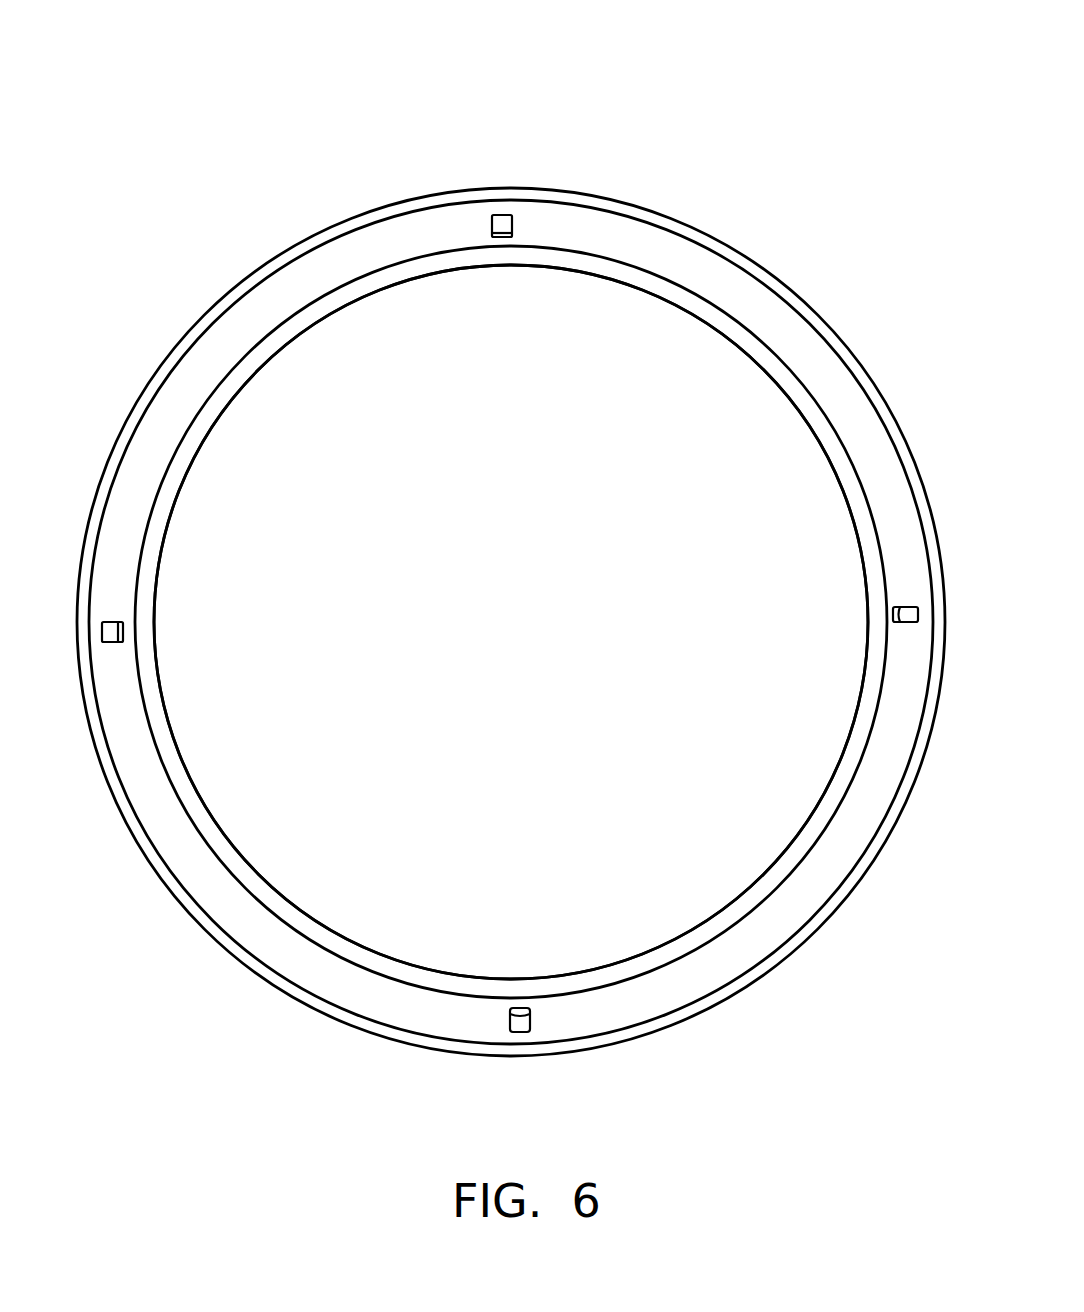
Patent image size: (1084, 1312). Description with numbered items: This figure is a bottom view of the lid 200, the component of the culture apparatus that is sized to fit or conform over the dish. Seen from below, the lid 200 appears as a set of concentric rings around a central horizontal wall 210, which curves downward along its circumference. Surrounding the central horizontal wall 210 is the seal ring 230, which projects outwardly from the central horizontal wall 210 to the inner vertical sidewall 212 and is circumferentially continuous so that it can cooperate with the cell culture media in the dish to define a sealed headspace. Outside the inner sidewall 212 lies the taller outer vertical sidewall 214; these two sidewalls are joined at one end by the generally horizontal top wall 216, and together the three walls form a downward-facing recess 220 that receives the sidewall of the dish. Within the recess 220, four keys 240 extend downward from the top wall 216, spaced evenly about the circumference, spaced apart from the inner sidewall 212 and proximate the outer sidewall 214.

The lid 200 is at (138, 55).
The central horizontal wall 210 is at (537, 613).
The inner vertical sidewall 212 is at (223, 415).
The outer vertical sidewall 214 is at (158, 368).
The top wall 216 is at (273, 303).
The recess 220 is at (241, 923).
The seal ring 230 is at (707, 317).
The key 240 is at (508, 216).